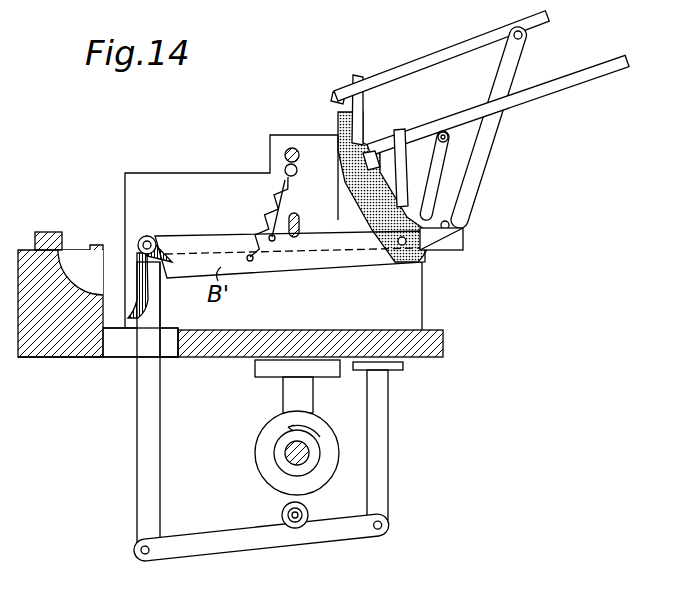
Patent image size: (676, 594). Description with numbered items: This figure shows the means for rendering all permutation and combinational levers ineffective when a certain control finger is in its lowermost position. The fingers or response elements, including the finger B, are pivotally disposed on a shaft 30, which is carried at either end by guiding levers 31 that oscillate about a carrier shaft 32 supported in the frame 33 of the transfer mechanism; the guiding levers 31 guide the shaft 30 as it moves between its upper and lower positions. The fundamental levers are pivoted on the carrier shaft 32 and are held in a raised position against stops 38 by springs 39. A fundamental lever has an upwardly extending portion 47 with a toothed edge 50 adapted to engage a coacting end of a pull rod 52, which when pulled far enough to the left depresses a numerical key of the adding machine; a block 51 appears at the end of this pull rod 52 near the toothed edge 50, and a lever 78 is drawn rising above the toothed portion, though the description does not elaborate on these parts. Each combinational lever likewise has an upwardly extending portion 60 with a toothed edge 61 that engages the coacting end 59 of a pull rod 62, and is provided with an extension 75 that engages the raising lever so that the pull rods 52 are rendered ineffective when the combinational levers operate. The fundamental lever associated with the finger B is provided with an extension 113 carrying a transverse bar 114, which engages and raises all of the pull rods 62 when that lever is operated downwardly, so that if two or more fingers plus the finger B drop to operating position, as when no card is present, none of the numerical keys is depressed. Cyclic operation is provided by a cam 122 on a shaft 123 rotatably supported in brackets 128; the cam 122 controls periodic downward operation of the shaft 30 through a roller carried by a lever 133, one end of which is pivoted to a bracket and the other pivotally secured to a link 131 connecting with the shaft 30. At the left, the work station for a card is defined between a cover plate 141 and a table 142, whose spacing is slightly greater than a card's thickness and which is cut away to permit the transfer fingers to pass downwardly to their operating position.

The shaft 30 is at (147, 236).
The guiding lever 31 is at (178, 236).
The carrier shaft 32 is at (400, 260).
The frame 33 is at (410, 295).
The stop 38 is at (297, 213).
The spring 39 is at (282, 198).
The upwardly extending portion 47 is at (370, 152).
The toothed edge 50 is at (340, 113).
The block 51 is at (338, 92).
The pull rod 52 is at (445, 55).
The coacting end 59 is at (363, 160).
The upwardly extending portion 60 is at (429, 136).
The toothed edge 61 is at (342, 214).
The pull rod 62 is at (580, 76).
The extension 75 is at (465, 238).
The lever 78 is at (360, 75).
The extension 113 is at (438, 170).
The transverse bar 114 is at (450, 137).
The cam 122 is at (267, 448).
The shaft 123 is at (292, 460).
The bracket 128 is at (300, 384).
The link 131 is at (155, 447).
The lever 133 is at (273, 540).
The cover plate 141 is at (62, 214).
The table 142 is at (20, 358).
The finger B is at (140, 290).